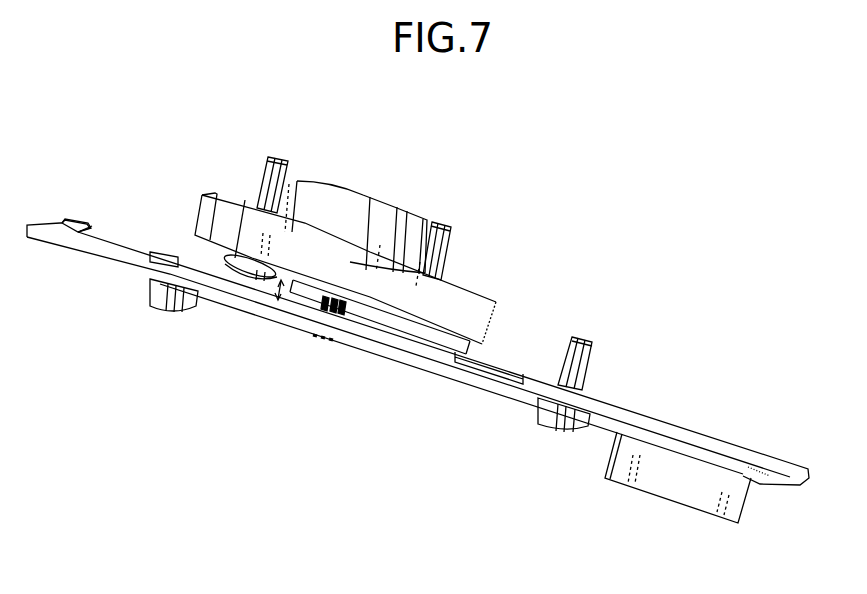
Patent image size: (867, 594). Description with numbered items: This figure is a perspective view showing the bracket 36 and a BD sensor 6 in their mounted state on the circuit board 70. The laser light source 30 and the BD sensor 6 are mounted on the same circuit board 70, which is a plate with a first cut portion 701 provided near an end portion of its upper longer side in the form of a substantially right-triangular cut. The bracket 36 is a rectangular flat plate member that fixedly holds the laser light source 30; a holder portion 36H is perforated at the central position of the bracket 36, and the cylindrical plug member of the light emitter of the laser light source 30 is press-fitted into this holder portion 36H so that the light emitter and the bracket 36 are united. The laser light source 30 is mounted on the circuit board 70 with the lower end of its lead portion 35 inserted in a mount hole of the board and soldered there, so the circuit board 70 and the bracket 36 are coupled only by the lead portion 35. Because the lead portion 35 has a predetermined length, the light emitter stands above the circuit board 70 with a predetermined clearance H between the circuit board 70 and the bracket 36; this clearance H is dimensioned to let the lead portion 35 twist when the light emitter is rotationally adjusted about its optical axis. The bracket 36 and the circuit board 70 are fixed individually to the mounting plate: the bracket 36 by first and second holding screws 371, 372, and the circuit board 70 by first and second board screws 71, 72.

The BD sensor 6 is at (82, 221).
The laser light source 30 is at (370, 197).
The lead portion 35 is at (337, 310).
The bracket 36 is at (467, 303).
The holder portion 36H is at (400, 220).
The circuit board 70 is at (673, 433).
The first board screw 71 is at (585, 368).
The second board screw 72 is at (180, 308).
The first holding screw 371 is at (266, 200).
The second holding screw 372 is at (450, 240).
The first cut portion 701 is at (240, 297).
The predetermined clearance H is at (281, 300).